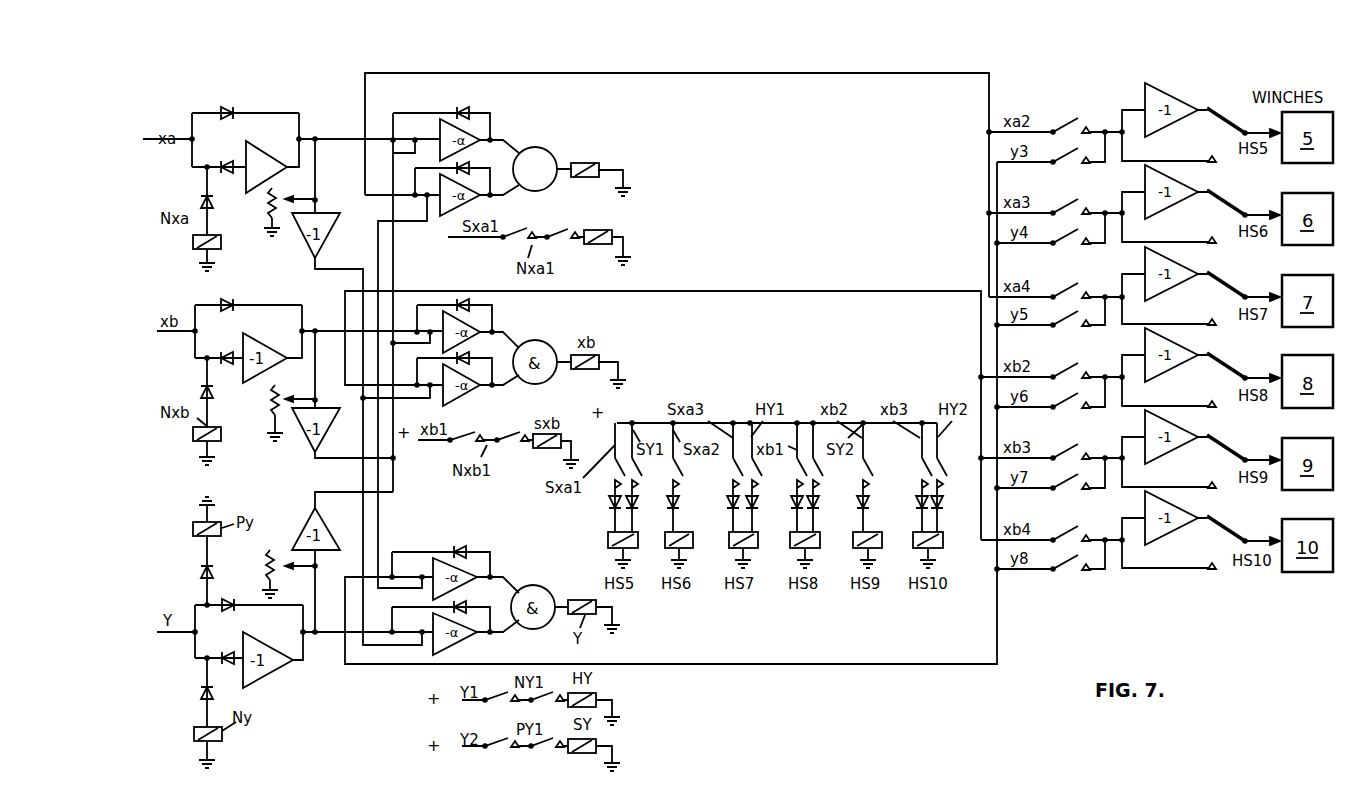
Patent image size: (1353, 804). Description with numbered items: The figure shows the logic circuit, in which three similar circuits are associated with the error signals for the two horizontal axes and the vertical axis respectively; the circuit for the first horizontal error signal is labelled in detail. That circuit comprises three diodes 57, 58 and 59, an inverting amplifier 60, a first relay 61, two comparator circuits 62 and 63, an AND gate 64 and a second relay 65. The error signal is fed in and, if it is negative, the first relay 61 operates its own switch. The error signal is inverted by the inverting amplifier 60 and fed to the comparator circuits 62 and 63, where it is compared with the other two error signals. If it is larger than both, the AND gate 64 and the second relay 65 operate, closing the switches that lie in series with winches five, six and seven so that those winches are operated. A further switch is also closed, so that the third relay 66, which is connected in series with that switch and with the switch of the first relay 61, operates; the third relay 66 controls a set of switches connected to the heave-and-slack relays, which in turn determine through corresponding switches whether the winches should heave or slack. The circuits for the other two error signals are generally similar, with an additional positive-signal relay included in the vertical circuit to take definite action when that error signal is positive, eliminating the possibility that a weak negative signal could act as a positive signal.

The diode 57 is at (229, 111).
The diode 58 is at (230, 160).
The diode 59 is at (199, 202).
The inverting amplifier 60 is at (270, 153).
The first relay 61 is at (194, 244).
The comparator circuit 62 is at (492, 120).
The comparator circuit 63 is at (476, 166).
The AND gate 64 is at (538, 147).
The second relay 65 is at (583, 178).
The third relay 66 is at (612, 232).